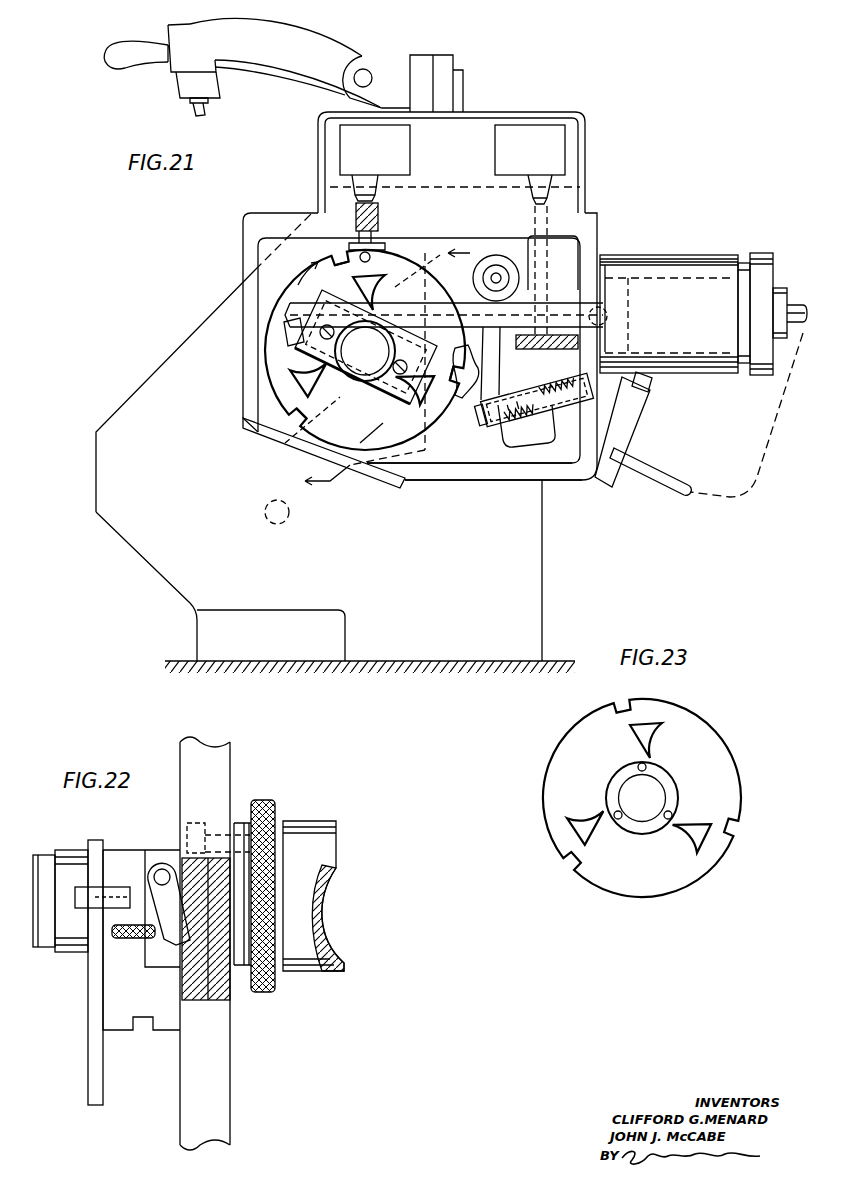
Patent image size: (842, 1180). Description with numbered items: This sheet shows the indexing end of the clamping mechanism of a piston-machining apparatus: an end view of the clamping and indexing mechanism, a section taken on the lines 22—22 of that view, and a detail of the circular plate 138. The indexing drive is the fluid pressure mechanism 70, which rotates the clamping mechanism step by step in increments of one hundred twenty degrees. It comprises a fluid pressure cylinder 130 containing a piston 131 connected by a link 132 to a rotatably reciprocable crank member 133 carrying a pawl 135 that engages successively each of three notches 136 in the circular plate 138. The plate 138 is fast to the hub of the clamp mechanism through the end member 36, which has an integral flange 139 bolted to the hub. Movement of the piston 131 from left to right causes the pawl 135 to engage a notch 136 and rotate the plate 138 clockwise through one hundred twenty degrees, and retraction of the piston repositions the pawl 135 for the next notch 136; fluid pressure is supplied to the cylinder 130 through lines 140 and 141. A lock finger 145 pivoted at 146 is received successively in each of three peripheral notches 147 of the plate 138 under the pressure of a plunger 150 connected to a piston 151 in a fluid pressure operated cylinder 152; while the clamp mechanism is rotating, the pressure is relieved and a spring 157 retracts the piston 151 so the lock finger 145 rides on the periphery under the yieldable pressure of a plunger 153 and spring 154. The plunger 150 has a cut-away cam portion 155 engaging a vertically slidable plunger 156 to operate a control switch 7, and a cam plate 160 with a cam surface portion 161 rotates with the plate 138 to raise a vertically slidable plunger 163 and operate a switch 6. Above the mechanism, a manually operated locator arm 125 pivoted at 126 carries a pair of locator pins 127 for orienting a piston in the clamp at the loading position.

In FIG. 21, the switch 6 is at (404, 155).
In FIG. 21, the control switch 7 is at (505, 143).
In FIG. 21, the section line 22— 22 is at (375, 368).
In FIG. 22, the end member 36 is at (298, 823).
In FIG. 21, the fluid pressure mechanism 70 is at (706, 354).
In FIG. 21, the locator arm 125 is at (180, 42).
In FIG. 21, the pivot 126 is at (366, 76).
In FIG. 21, the locator pins 127 is at (193, 106).
In FIG. 21, the fluid pressure cylinder 130 is at (686, 314).
In FIG. 21, the piston 131 is at (626, 310).
In FIG. 21, the link 132 is at (375, 305).
In FIG. 22, the link 132 is at (95, 998).
In FIG. 21, the crank member 133 is at (298, 335).
In FIG. 22, the crank member 133 is at (159, 850).
In FIG. 22, the pawl 135 is at (167, 935).
In FIG. 21, the notches 136 is at (366, 282).
In FIG. 22, the notches 136 is at (183, 965).
In FIG. 23, the notches 136 is at (630, 736).
In FIG. 21, the circular plate 138 is at (462, 415).
In FIG. 22, the circular plate 138 is at (220, 790).
In FIG. 23, the circular plate 138 is at (722, 760).
In FIG. 22, the flange 139 is at (278, 803).
In FIG. 21, the line 140 is at (601, 310).
In FIG. 21, the line 141 is at (800, 305).
In FIG. 21, the lock finger 145 is at (474, 371).
In FIG. 21, the pivot 146 is at (493, 274).
In FIG. 21, the notches 147 is at (335, 258).
In FIG. 21, the plunger 150 is at (497, 388).
In FIG. 21, the piston 151 is at (632, 418).
In FIG. 21, the fluid pressure operated cylinder 152 is at (628, 441).
In FIG. 21, the plunger 153 is at (513, 438).
In FIG. 21, the spring 154 is at (530, 479).
In FIG. 21, the cam portion 155 is at (497, 463).
In FIG. 21, the vertically slidable plunger 156 is at (528, 262).
In FIG. 21, the spring 157 is at (549, 378).
In FIG. 21, the cam plate 160 is at (325, 450).
In FIG. 21, the cam surface portion 161 is at (272, 400).
In FIG. 21, the vertically slidable plunger 163 is at (374, 254).